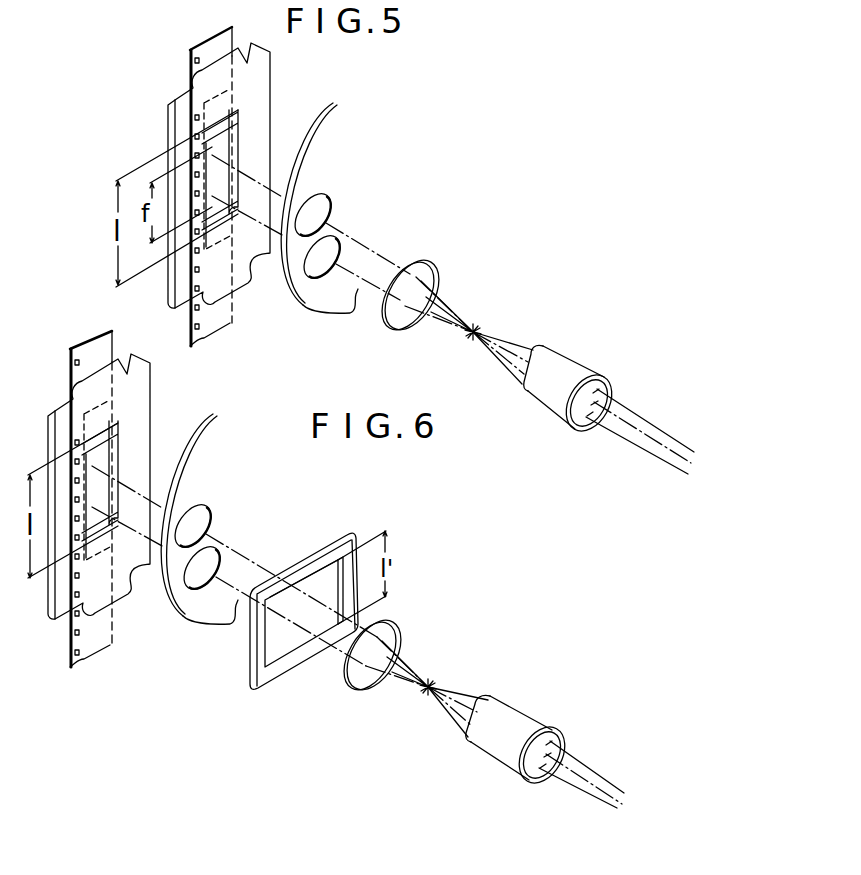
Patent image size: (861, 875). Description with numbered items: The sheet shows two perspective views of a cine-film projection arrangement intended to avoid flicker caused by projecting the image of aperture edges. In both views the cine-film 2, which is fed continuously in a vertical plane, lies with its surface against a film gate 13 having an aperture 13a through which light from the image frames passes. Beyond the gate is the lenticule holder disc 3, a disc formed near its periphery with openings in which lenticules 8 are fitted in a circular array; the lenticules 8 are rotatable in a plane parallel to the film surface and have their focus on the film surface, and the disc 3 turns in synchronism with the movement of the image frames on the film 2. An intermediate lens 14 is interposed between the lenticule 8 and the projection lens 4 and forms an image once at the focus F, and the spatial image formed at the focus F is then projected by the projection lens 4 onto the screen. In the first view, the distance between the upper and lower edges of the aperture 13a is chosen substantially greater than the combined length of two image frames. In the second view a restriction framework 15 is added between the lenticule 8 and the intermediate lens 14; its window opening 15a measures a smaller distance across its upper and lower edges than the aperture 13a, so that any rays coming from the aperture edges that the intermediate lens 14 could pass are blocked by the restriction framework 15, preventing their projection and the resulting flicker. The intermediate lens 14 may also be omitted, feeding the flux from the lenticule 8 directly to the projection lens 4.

In FIG. 5, the cine-film 2 is at (228, 322).
In FIG. 6, the cine-film 2 is at (108, 630).
In FIG. 5, the film gate 13 is at (270, 72).
In FIG. 6, the film gate 13 is at (145, 389).
In FIG. 5, the aperture 13a is at (242, 131).
In FIG. 6, the aperture 13a is at (124, 437).
In FIG. 5, the lenticule holder disc 3 is at (334, 103).
In FIG. 6, the lenticule holder disc 3 is at (237, 446).
In FIG. 5, the lenticules 8 is at (331, 234).
In FIG. 6, the lenticules 8 is at (211, 547).
In FIG. 5, the intermediate lens 14 is at (437, 274).
In FIG. 6, the intermediate lens 14 is at (398, 641).
In FIG. 5, the focus F is at (480, 331).
In FIG. 6, the focus F is at (434, 686).
In FIG. 5, the projection lens 4 is at (573, 362).
In FIG. 6, the projection lens 4 is at (518, 712).
In FIG. 6, the restriction framework 15 is at (276, 623).
In FIG. 6, the window opening 15a is at (272, 641).